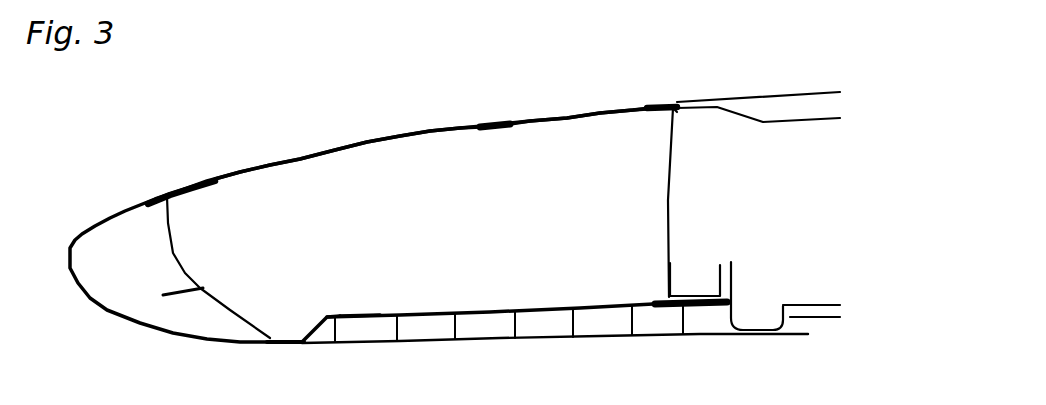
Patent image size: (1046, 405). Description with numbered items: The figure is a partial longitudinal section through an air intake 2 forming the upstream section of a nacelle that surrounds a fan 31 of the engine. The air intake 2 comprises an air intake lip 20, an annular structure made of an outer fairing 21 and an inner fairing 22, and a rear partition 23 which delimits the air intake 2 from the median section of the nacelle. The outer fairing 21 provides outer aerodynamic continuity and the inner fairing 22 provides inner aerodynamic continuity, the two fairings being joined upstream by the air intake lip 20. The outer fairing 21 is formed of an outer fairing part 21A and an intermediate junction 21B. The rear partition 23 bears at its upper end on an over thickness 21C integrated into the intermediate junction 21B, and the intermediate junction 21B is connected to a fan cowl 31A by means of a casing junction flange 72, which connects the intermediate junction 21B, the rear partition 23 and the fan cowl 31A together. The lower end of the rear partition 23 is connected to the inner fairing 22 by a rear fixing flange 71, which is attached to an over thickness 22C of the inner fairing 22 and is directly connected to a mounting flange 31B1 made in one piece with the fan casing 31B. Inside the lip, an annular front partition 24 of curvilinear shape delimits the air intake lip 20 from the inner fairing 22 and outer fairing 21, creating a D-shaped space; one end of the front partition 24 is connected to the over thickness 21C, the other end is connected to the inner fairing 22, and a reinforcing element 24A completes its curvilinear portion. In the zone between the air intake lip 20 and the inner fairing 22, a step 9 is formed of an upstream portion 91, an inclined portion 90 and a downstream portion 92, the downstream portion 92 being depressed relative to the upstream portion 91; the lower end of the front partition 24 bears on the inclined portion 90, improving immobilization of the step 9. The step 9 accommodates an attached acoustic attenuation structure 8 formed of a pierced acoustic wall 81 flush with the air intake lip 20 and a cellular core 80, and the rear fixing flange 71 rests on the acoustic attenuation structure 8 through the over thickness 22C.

The air intake 2 is at (152, 136).
The air intake lip 20 is at (108, 217).
The outer fairing 21 is at (385, 128).
The outer fairing part 21A is at (275, 163).
The intermediate junction 21B is at (580, 117).
The over thickness 21C is at (180, 190).
The inner fairing 22 is at (505, 309).
The over thickness 22C is at (657, 300).
The rear partition 23 is at (672, 203).
The front partition 24 is at (175, 258).
The reinforcing element 24A is at (200, 293).
The fan 31 is at (847, 74).
The fan cowl 31A is at (777, 93).
The fan casing 31B is at (827, 305).
The mounting flange 31B1 is at (735, 271).
The rear fixing flange 71 is at (693, 293).
The casing junction flange 72 is at (700, 113).
The acoustic attenuation structure 8 is at (555, 351).
The cellular core 80 is at (607, 322).
The pierced acoustic wall 81 is at (505, 345).
The step 9 is at (329, 326).
The inclined portion 90 is at (320, 313).
The upstream portion 91 is at (277, 347).
The downstream portion 92 is at (371, 315).